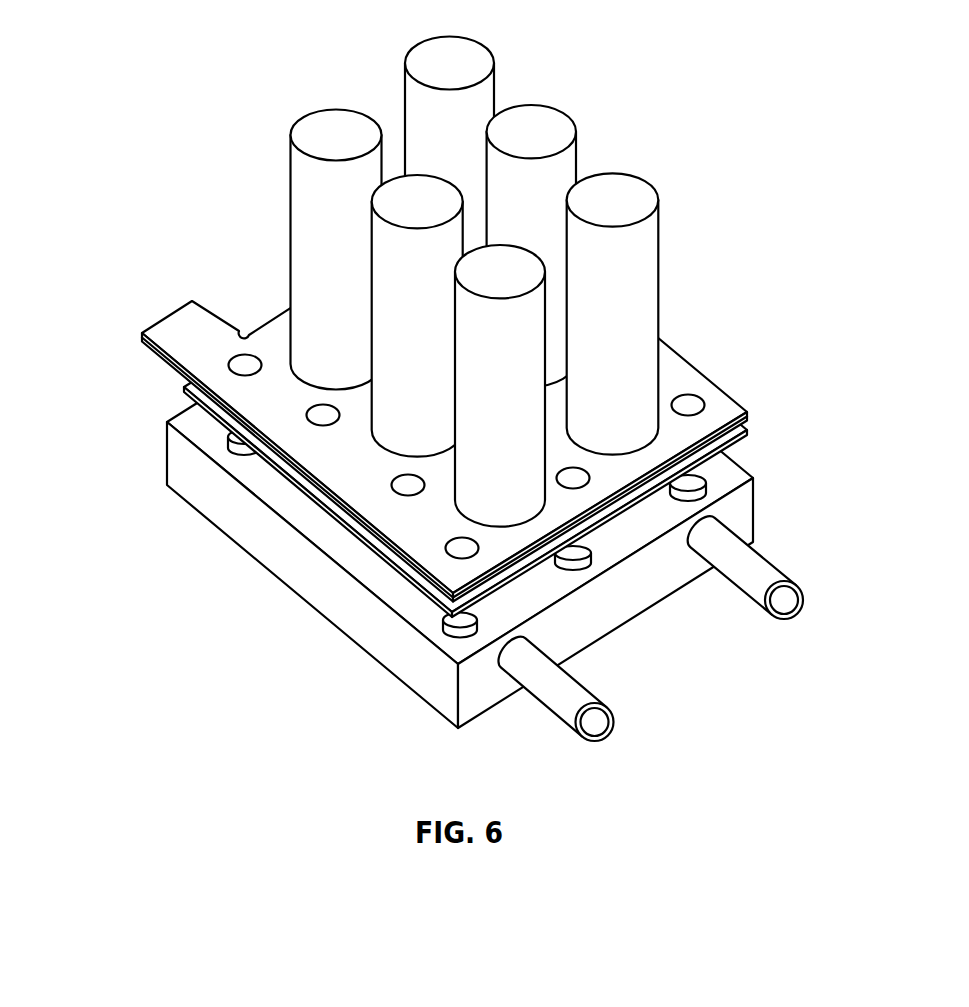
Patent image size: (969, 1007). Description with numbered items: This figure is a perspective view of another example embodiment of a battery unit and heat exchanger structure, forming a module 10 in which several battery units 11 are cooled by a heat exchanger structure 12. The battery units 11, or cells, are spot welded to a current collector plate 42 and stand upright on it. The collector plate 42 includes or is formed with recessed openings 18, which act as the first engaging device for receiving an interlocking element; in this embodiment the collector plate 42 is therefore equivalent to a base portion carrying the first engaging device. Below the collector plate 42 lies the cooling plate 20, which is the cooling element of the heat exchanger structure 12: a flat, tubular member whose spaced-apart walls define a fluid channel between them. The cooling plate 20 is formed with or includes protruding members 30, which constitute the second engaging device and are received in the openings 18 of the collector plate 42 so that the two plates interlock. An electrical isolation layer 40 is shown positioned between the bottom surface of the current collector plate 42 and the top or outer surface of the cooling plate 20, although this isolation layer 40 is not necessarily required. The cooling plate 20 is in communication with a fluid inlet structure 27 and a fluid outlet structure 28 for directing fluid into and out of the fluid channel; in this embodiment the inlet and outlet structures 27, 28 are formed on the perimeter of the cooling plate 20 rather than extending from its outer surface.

The module 10 is at (447, 373).
The battery units 11 is at (310, 116).
The heat exchanger structure 12 is at (447, 464).
The recessed openings 18 is at (692, 398).
The cooling plate 20 is at (167, 457).
The fluid inlet structure 27 is at (790, 583).
The fluid outlet structure 28 is at (600, 697).
The protruding members 30 is at (708, 481).
The electrical isolation layer 40 is at (283, 477).
The current collector plate 42 is at (163, 352).